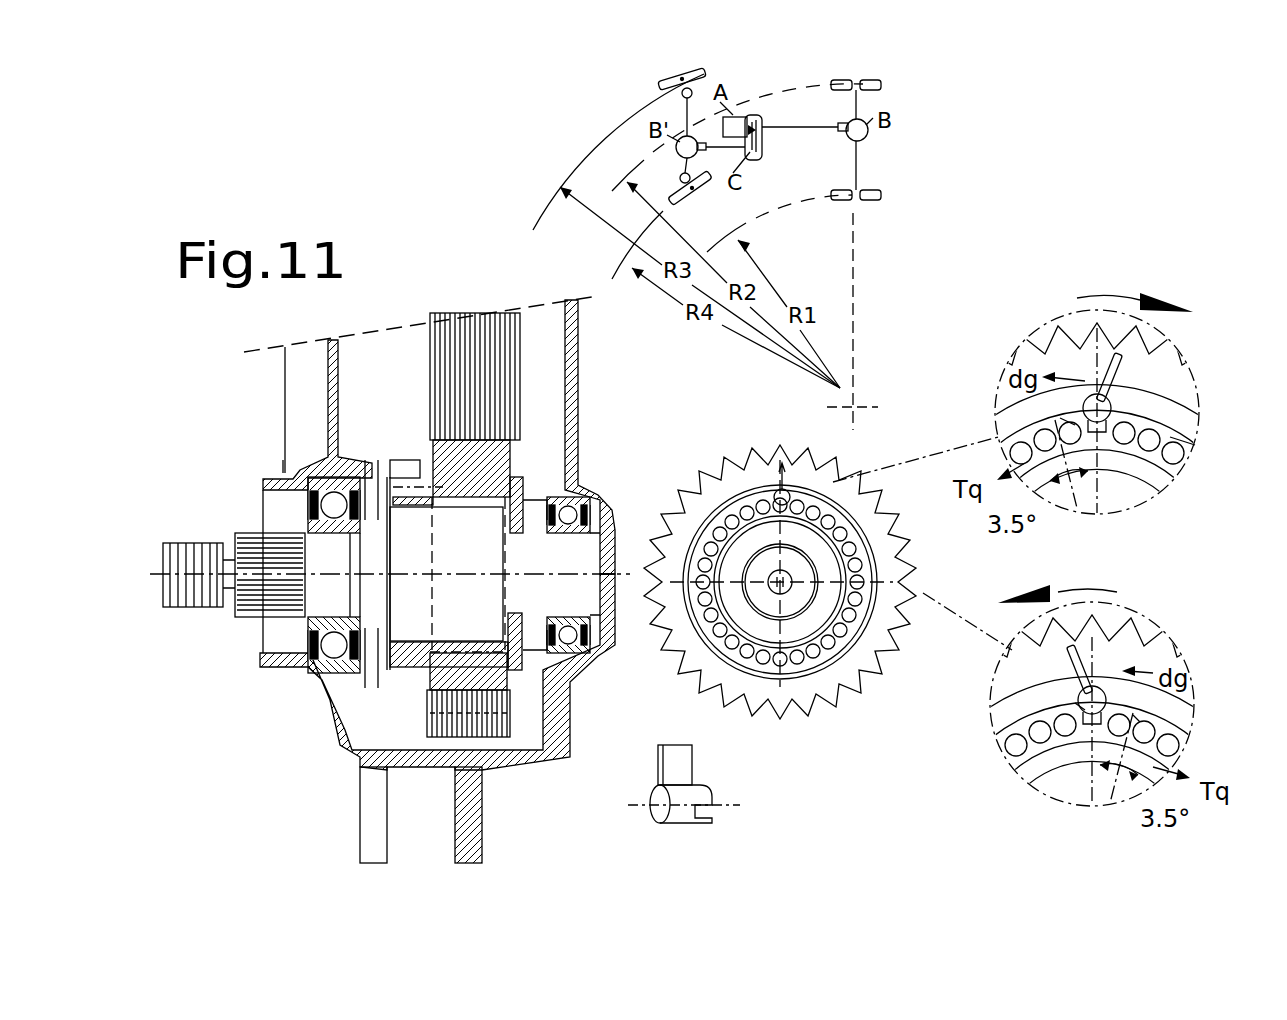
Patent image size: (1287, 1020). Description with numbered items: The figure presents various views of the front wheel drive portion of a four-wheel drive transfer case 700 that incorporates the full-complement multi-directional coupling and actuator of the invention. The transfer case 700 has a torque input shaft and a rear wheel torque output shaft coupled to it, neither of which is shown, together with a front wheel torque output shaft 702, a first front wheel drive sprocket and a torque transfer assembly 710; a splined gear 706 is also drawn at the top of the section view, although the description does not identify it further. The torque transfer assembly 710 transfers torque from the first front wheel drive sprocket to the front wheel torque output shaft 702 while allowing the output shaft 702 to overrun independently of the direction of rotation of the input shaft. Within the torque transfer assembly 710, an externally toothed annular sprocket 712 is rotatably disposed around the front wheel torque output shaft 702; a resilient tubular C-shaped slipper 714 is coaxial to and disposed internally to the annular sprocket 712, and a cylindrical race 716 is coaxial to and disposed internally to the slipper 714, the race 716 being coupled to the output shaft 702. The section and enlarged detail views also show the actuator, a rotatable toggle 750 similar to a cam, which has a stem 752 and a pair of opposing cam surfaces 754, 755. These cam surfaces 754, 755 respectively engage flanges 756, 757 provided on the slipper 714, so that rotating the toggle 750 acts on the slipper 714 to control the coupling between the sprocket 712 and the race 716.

The four-wheel drive transfer case 700 is at (230, 771).
The front wheel torque output shaft 702 is at (232, 585).
The gear 706 is at (450, 332).
The torque transfer assembly 710 is at (378, 723).
The externally toothed annular sprocket 712 is at (480, 730).
The resilient tubular C-shaped slipper 714 is at (523, 667).
The cylindrical race 716 is at (712, 533).
The rotatable toggle 750 is at (313, 460).
The stem 752 is at (403, 470).
The cam surface 754 is at (1170, 437).
The cam surface 755 is at (1075, 703).
The flange 756 is at (1133, 715).
The flange 757 is at (1060, 418).